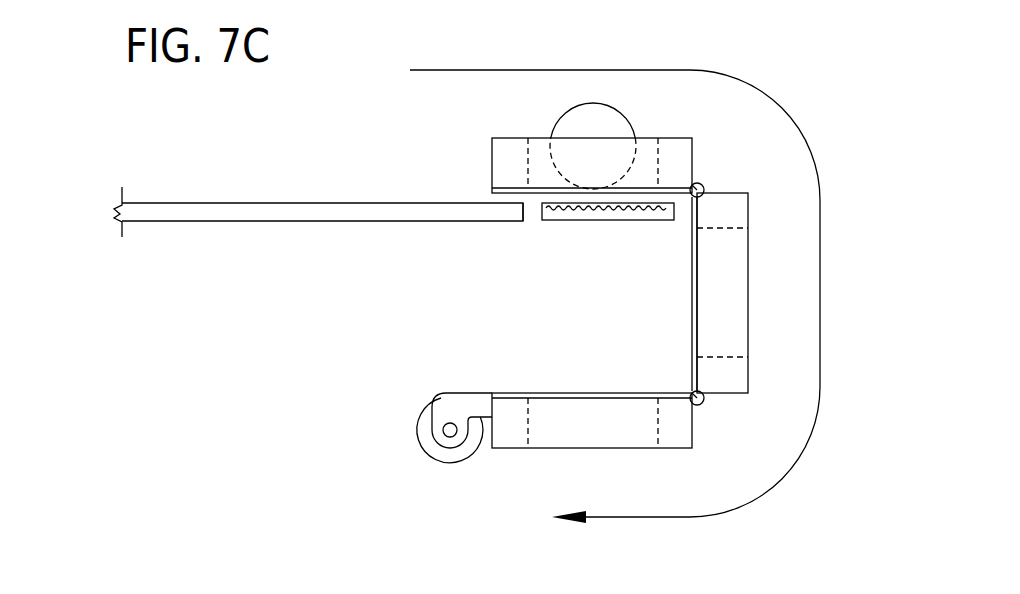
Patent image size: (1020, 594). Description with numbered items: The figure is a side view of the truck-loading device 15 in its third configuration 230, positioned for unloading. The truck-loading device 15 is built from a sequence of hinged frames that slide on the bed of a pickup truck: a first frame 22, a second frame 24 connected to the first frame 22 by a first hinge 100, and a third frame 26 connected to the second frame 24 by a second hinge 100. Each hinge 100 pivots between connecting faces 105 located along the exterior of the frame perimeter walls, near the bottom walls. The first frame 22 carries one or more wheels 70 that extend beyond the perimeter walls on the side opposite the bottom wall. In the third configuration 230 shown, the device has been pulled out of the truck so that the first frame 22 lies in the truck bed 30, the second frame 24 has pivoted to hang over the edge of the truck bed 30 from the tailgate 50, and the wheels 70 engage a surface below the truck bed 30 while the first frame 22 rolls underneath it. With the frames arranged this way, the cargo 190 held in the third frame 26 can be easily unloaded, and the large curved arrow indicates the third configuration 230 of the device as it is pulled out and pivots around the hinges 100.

The truck-loading device 15 is at (492, 166).
The first frame 22 is at (563, 393).
The second frame 24 is at (692, 311).
The third frame 26 is at (532, 194).
The truck bed 30 is at (228, 221).
The tailgate 50 is at (607, 221).
The wheels 70 is at (417, 430).
The hinges 100 is at (692, 198).
The connecting faces 105 is at (692, 152).
The cargo 190 is at (566, 112).
The third configuration 230 is at (768, 68).